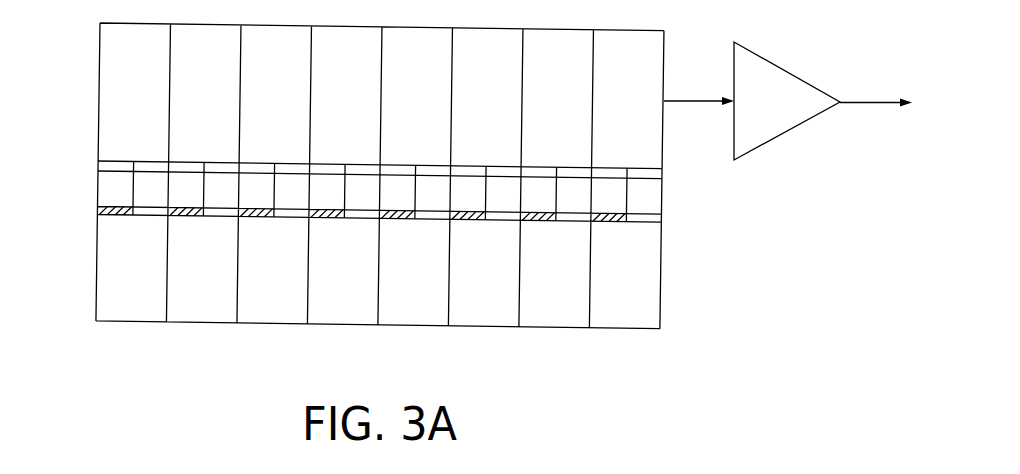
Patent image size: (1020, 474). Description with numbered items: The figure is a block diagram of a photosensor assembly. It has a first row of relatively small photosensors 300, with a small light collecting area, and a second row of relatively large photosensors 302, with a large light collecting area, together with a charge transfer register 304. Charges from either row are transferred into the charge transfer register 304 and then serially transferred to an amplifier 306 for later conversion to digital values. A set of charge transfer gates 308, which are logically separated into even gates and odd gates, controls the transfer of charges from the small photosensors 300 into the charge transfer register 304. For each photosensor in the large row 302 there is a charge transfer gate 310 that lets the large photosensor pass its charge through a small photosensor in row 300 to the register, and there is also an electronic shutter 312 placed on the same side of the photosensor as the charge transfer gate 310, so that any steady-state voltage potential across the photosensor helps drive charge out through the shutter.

The first row of relatively small photosensors 300 is at (377, 203).
The second row of relatively large photosensors 302 is at (663, 275).
The charge transfer register 304 is at (665, 46).
The amplifier 306 is at (791, 113).
The charge transfer gates 308 is at (98, 163).
The charge transfer gate 310 is at (646, 222).
The electronic shutter 312 is at (536, 222).